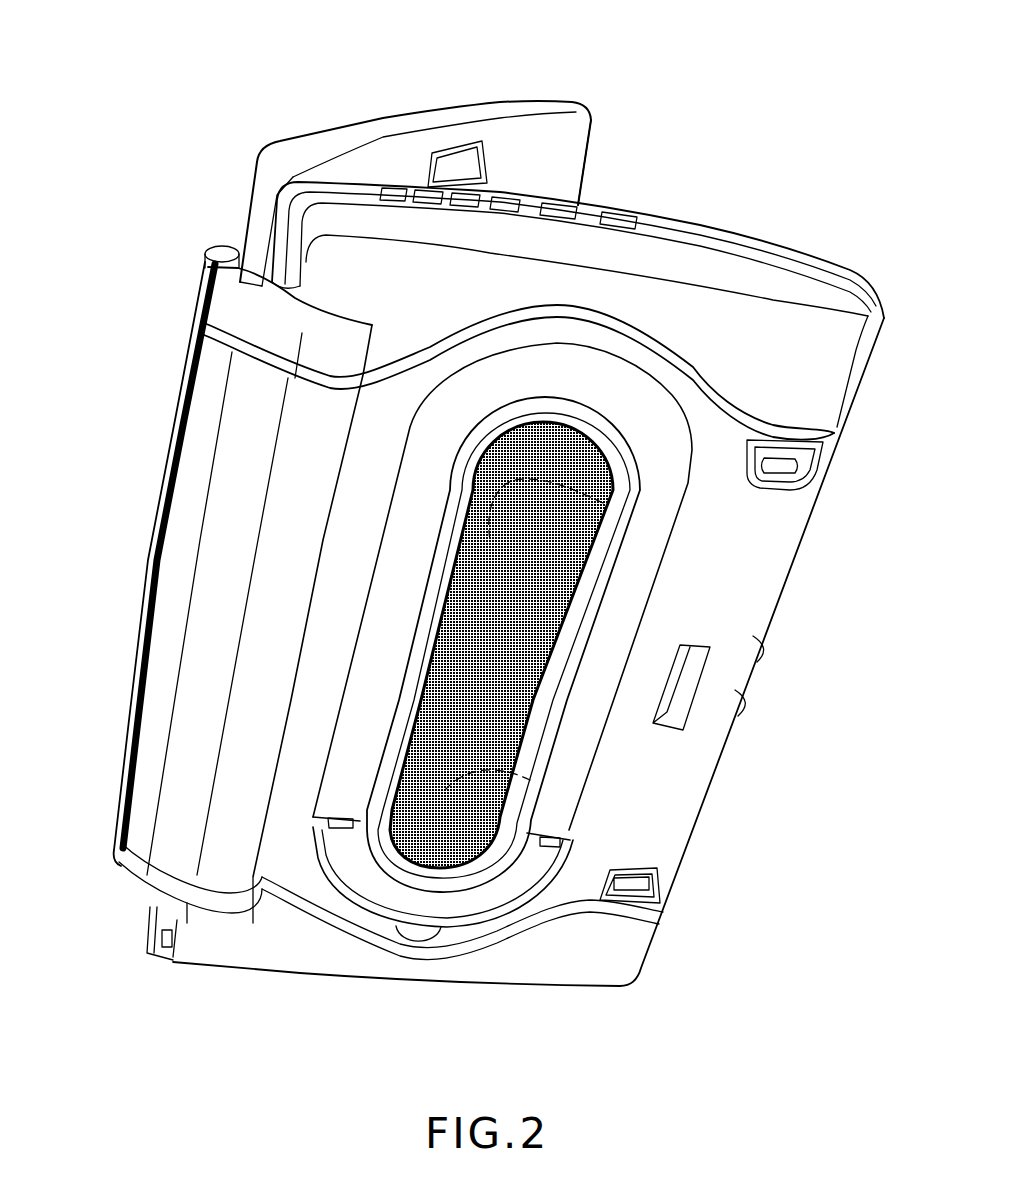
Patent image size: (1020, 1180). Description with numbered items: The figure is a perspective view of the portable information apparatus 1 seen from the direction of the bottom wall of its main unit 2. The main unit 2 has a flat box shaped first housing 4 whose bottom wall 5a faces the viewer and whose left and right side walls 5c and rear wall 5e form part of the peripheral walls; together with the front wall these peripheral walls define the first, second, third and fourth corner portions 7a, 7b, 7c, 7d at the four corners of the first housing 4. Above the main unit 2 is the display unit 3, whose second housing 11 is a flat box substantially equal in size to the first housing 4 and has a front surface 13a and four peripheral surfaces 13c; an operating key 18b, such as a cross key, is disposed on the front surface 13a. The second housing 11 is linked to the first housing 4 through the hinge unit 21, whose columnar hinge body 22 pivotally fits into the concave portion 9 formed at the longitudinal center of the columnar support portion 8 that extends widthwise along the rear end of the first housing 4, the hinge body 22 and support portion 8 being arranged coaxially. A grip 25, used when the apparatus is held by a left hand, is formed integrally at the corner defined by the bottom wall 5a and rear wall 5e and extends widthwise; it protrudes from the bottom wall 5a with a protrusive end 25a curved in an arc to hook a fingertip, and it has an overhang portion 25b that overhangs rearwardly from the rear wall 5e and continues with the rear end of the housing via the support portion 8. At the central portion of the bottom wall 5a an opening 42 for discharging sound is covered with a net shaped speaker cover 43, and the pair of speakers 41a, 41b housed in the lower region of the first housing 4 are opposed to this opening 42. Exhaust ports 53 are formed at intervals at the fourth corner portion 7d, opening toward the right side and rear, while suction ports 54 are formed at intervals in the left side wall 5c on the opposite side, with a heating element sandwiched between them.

The portable information apparatus 1 is at (766, 102).
The main unit 2 is at (826, 248).
The display unit 3 is at (272, 138).
The first housing 4 is at (573, 967).
The bottom wall 5a is at (285, 935).
The side walls 5c is at (708, 240).
The rear wall 5e is at (283, 290).
The first corner portion 7a is at (860, 276).
The second corner portion 7b is at (283, 197).
The third corner portion 7c is at (638, 976).
The fourth corner portion 7d is at (173, 958).
The support portion 8 is at (206, 252).
The concave portion 9 is at (158, 474).
The second housing 11 is at (404, 116).
The front surface 13a is at (570, 148).
The peripheral surfaces 13c is at (457, 115).
The operating key 18b is at (463, 167).
The hinge unit 21 is at (133, 548).
The hinge body 22 is at (142, 590).
The grip 25 is at (183, 728).
The protrusive end 25a is at (217, 837).
The overhang portion 25b is at (222, 305).
The speaker 41a is at (603, 503).
The speaker 41b is at (530, 780).
The opening 42 is at (445, 633).
The speaker cover 43 is at (575, 580).
The exhaust ports 53 is at (162, 937).
The suction ports 54 is at (455, 203).